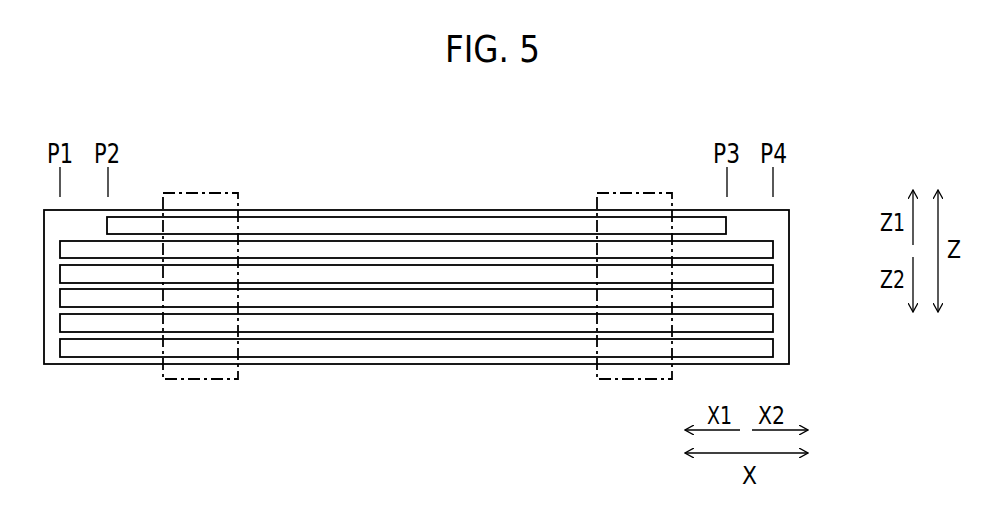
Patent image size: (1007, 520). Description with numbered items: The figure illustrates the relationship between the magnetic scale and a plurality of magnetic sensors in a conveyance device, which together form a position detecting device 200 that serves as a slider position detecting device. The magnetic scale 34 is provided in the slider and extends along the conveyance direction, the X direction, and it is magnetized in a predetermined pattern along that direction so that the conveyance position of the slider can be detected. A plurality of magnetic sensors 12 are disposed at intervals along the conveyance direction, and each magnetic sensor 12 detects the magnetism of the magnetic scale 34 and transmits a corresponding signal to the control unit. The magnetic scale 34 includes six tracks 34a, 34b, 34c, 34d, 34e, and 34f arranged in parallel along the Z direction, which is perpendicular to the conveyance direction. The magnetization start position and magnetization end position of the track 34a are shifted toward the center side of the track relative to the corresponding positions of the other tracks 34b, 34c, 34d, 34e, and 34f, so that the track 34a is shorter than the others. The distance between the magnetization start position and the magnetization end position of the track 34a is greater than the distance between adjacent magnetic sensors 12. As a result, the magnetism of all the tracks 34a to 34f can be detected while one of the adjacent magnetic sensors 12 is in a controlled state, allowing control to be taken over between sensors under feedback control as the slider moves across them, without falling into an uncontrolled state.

The position detecting device 200 is at (714, 102).
The magnetic sensor 12 is at (208, 193).
The magnetic scale 34 is at (455, 210).
The track 34a is at (726, 226).
The track 34b is at (773, 249).
The track 34c is at (773, 274).
The track 34d is at (773, 298).
The track 34e is at (773, 323).
The track 34f is at (773, 348).